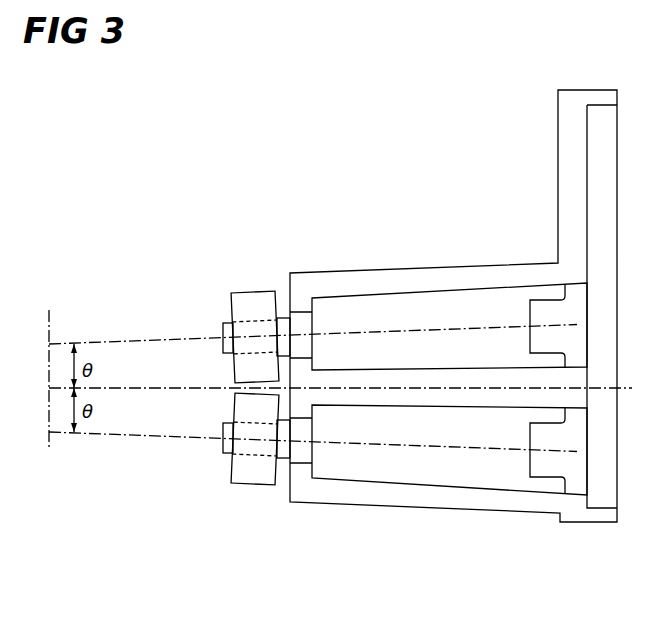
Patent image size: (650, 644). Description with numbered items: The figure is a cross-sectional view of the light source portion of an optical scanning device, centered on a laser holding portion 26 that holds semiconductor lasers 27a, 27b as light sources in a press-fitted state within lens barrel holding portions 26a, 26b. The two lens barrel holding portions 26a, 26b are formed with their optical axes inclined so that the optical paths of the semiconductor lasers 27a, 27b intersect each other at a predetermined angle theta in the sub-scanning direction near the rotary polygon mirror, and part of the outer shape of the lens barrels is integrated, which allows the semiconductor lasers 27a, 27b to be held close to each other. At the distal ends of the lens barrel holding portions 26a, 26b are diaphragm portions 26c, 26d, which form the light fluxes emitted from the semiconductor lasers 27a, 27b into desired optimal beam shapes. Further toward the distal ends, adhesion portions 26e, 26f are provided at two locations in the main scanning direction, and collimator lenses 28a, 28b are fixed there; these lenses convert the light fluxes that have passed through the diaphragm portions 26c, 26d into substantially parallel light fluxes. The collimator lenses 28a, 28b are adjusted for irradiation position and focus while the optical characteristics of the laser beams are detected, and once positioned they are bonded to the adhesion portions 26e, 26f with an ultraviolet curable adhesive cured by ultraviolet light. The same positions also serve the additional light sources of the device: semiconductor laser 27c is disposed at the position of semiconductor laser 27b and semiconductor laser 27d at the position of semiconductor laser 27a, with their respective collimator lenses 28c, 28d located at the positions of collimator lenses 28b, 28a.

The laser holding portion 26 is at (570, 150).
The lens barrel holding portion 26a is at (475, 488).
The lens barrel holding portion 26b is at (427, 292).
The diaphragm portion 26c is at (300, 458).
The diaphragm portion 26d is at (300, 313).
The adhesion portion 26e is at (222, 446).
The adhesion portion 26f is at (222, 335).
The semiconductor laser 27a is at (568, 513).
The semiconductor laser 27b is at (510, 274).
The semiconductor laser 27c is at (547, 310).
The semiconductor laser 27d is at (548, 463).
The collimator lens 28a is at (237, 492).
The collimator lens 28b is at (222, 290).
The collimator lens 28c is at (255, 292).
The collimator lens 28d is at (252, 486).